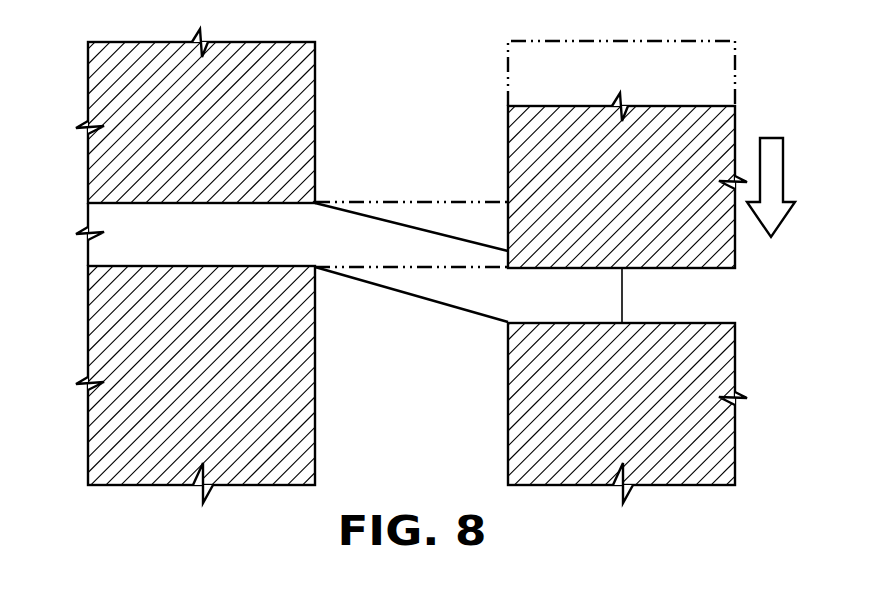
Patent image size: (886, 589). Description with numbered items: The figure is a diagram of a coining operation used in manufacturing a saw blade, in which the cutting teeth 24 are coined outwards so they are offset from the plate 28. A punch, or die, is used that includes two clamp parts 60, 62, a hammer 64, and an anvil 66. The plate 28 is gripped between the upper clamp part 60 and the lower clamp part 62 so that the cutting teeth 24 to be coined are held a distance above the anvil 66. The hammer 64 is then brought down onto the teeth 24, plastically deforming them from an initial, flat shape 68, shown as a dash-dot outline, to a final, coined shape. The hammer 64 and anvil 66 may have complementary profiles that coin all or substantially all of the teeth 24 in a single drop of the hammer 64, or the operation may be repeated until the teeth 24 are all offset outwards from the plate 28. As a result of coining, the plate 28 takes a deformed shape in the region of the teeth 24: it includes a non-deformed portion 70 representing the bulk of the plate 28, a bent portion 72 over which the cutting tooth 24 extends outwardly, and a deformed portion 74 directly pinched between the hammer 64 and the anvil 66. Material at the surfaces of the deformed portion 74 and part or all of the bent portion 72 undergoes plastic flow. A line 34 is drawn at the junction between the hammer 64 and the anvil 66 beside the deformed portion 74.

The cutting teeth 24 is at (450, 320).
The plate 28 is at (102, 251).
The junction line 34 is at (622, 291).
The clamp part 60 is at (185, 126).
The clamp part 62 is at (186, 394).
The hammer 64 is at (616, 189).
The anvil 66 is at (616, 421).
The initial flat shape 68 is at (407, 201).
The non-deformed portion 70 is at (196, 246).
The bent portion 72 is at (395, 259).
The deformed portion 74 is at (559, 304).